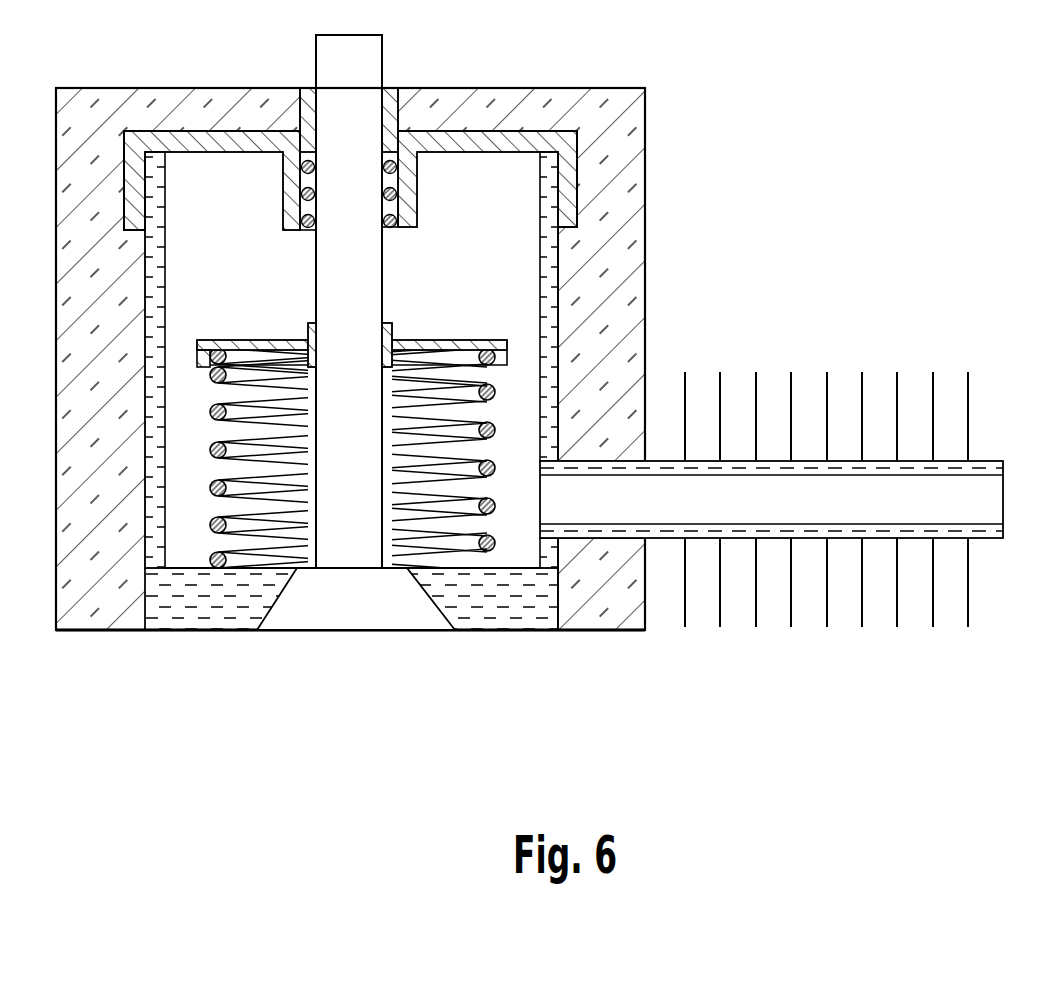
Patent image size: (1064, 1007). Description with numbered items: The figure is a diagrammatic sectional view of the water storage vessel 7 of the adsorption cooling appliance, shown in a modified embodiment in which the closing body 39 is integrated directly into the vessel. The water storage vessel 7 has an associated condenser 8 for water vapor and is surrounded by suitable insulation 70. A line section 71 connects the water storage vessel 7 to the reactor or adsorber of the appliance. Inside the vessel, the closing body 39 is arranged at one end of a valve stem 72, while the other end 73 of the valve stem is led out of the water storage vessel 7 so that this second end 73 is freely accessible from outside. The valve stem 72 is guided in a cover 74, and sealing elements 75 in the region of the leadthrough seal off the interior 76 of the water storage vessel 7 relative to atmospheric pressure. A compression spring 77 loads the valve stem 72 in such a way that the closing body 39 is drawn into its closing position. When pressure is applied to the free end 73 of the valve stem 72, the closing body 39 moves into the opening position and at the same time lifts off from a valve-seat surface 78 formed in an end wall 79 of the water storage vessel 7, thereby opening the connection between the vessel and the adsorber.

The water storage vessel 7 is at (553, 307).
The condenser 8 is at (936, 613).
The closing body 39 is at (337, 603).
The insulation 70 is at (601, 250).
The line section 71 is at (983, 525).
The valve stem 72 is at (357, 545).
The other end of the valve stem 73 is at (328, 68).
The cover 74 is at (503, 138).
The sealing elements 75 is at (392, 157).
The interior of the water storage vessel 76 is at (515, 222).
The compression spring 77 is at (226, 530).
The valve-seat surface 78 is at (412, 570).
The end wall of the water storage vessel 79 is at (513, 600).